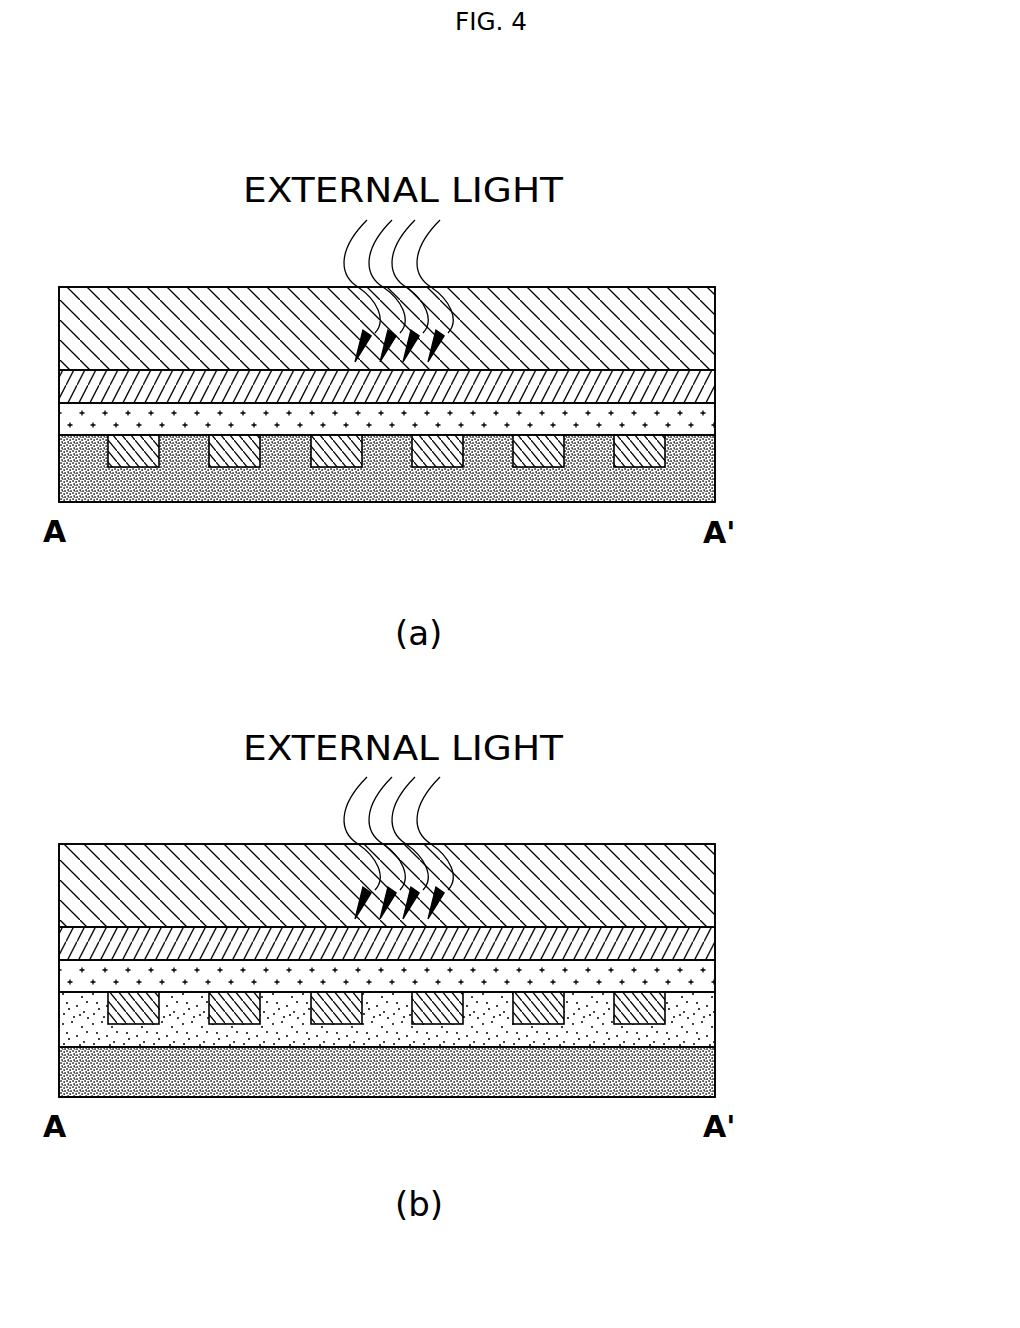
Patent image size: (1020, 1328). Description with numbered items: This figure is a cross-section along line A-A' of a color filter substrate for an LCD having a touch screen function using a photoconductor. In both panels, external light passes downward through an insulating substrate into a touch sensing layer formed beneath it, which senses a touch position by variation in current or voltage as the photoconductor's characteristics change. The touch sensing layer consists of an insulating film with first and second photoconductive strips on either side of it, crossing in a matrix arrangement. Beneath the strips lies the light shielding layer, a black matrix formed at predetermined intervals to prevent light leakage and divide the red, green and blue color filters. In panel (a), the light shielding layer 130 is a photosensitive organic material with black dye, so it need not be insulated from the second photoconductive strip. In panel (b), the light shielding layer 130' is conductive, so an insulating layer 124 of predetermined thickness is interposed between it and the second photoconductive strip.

The insulating layer 124 is at (700, 1035).
The light shielding layer 130 is at (387, 516).
The light shielding layer 130' is at (387, 1114).